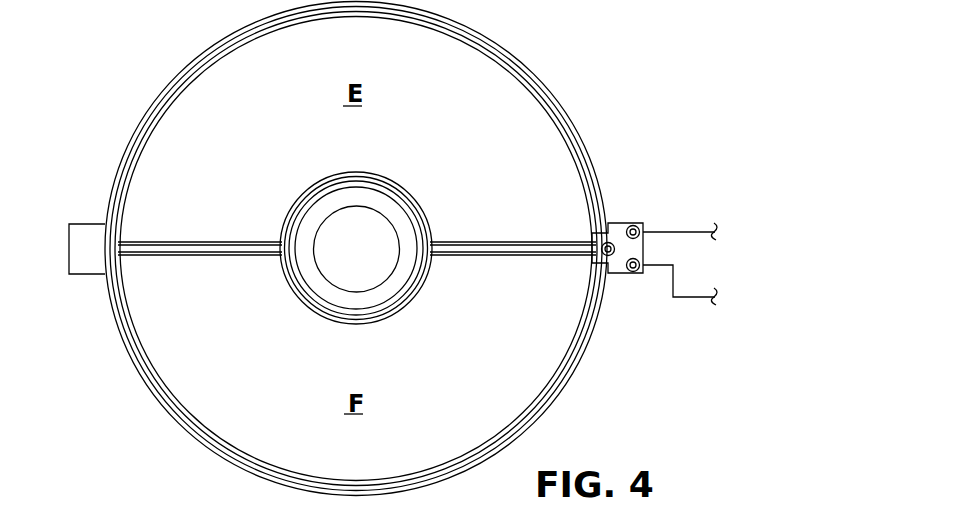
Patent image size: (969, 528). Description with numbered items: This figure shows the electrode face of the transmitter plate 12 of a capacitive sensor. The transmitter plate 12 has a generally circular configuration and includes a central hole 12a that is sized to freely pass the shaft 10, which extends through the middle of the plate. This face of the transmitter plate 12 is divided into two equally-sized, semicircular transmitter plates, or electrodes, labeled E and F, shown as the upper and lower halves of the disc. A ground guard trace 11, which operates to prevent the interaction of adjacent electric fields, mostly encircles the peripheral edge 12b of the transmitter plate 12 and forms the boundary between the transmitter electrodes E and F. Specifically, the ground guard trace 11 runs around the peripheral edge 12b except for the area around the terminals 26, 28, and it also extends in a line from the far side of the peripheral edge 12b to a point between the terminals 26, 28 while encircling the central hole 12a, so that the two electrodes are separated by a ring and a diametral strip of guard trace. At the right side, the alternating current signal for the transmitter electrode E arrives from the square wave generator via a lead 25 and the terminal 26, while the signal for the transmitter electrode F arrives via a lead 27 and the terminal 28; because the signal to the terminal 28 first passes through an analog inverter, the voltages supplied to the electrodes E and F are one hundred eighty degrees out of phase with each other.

The shaft 10 is at (328, 283).
The ground guard trace 11 is at (208, 60).
The transmitter plate 12 is at (140, 106).
The central hole 12a is at (395, 206).
The peripheral edge 12b is at (493, 42).
The lead 25 is at (678, 232).
The terminal 26 is at (637, 228).
The lead 27 is at (690, 298).
The terminal 28 is at (636, 274).